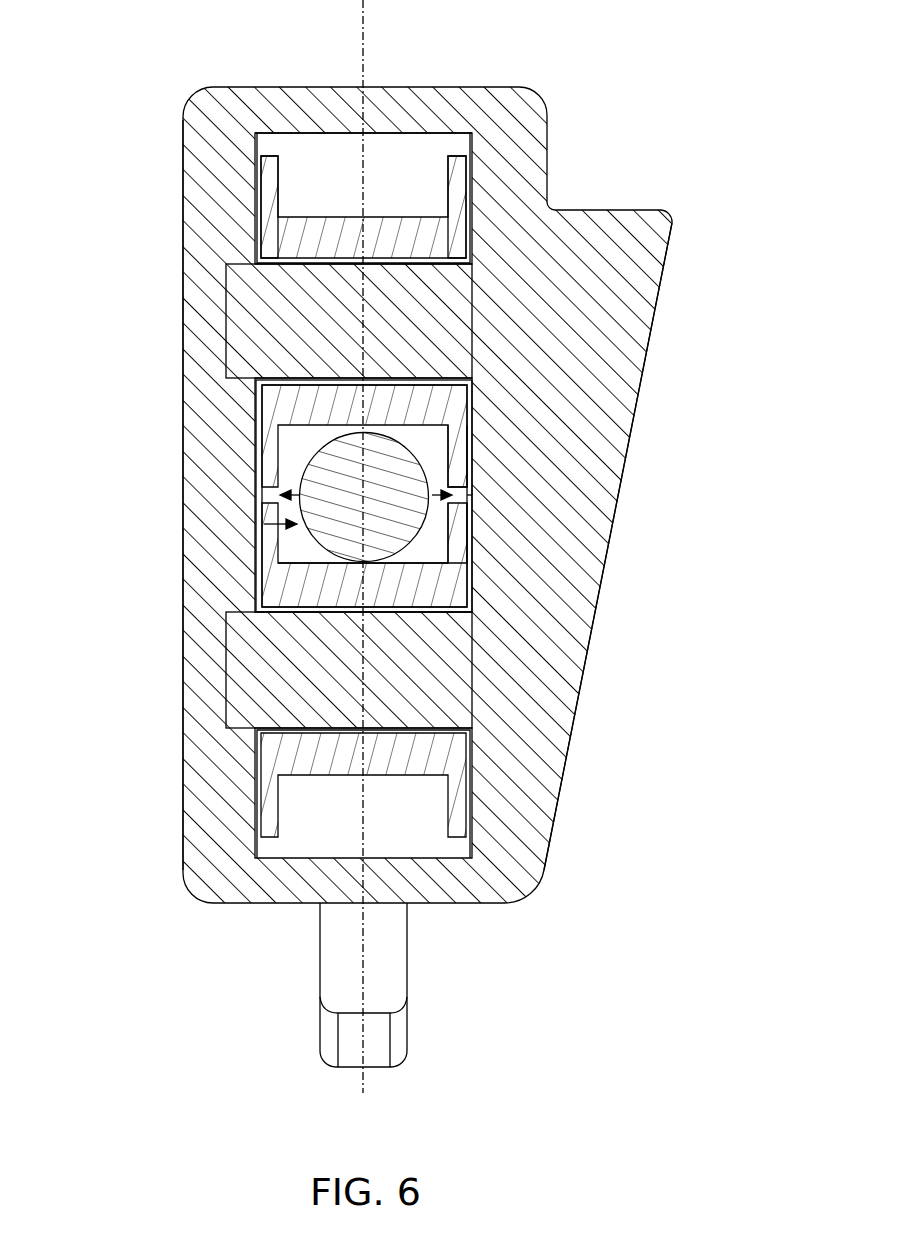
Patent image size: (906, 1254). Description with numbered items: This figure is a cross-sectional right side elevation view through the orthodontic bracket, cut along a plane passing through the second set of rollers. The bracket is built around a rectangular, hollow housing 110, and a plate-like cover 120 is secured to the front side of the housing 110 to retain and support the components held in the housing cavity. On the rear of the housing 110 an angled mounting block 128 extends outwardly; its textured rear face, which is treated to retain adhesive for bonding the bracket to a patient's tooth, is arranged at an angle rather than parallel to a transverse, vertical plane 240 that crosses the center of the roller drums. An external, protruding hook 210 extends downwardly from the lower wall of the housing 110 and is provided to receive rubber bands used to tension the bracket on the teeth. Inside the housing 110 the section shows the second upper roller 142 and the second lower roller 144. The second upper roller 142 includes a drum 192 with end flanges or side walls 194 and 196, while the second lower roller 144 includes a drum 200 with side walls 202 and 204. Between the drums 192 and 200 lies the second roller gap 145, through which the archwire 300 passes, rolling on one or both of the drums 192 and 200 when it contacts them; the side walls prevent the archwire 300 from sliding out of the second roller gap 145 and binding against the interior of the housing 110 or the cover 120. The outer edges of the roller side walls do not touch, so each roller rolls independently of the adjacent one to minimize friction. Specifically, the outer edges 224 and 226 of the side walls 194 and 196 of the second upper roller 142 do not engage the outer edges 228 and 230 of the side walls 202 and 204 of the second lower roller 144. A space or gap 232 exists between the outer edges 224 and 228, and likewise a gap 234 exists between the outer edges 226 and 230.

The housing 110 is at (538, 102).
The cover 120 is at (183, 300).
The mounting block 128 is at (656, 316).
The second upper roller 142 is at (400, 211).
The second lower roller 144 is at (314, 784).
The second roller gap 145 is at (268, 542).
The drum 192 is at (359, 197).
The side wall 194 is at (270, 178).
The side wall 196 is at (455, 186).
The drum 200 is at (385, 574).
The side wall 202 is at (310, 588).
The side wall 204 is at (456, 532).
The hook 210 is at (409, 958).
The outer edge 224 is at (262, 496).
The outer edge 226 is at (470, 496).
The outer edge 228 is at (260, 500).
The outer edge 230 is at (463, 502).
The gap 232 is at (416, 430).
The gap 234 is at (428, 486).
The transverse vertical plane 240 is at (362, 33).
The archwire 300 is at (387, 522).